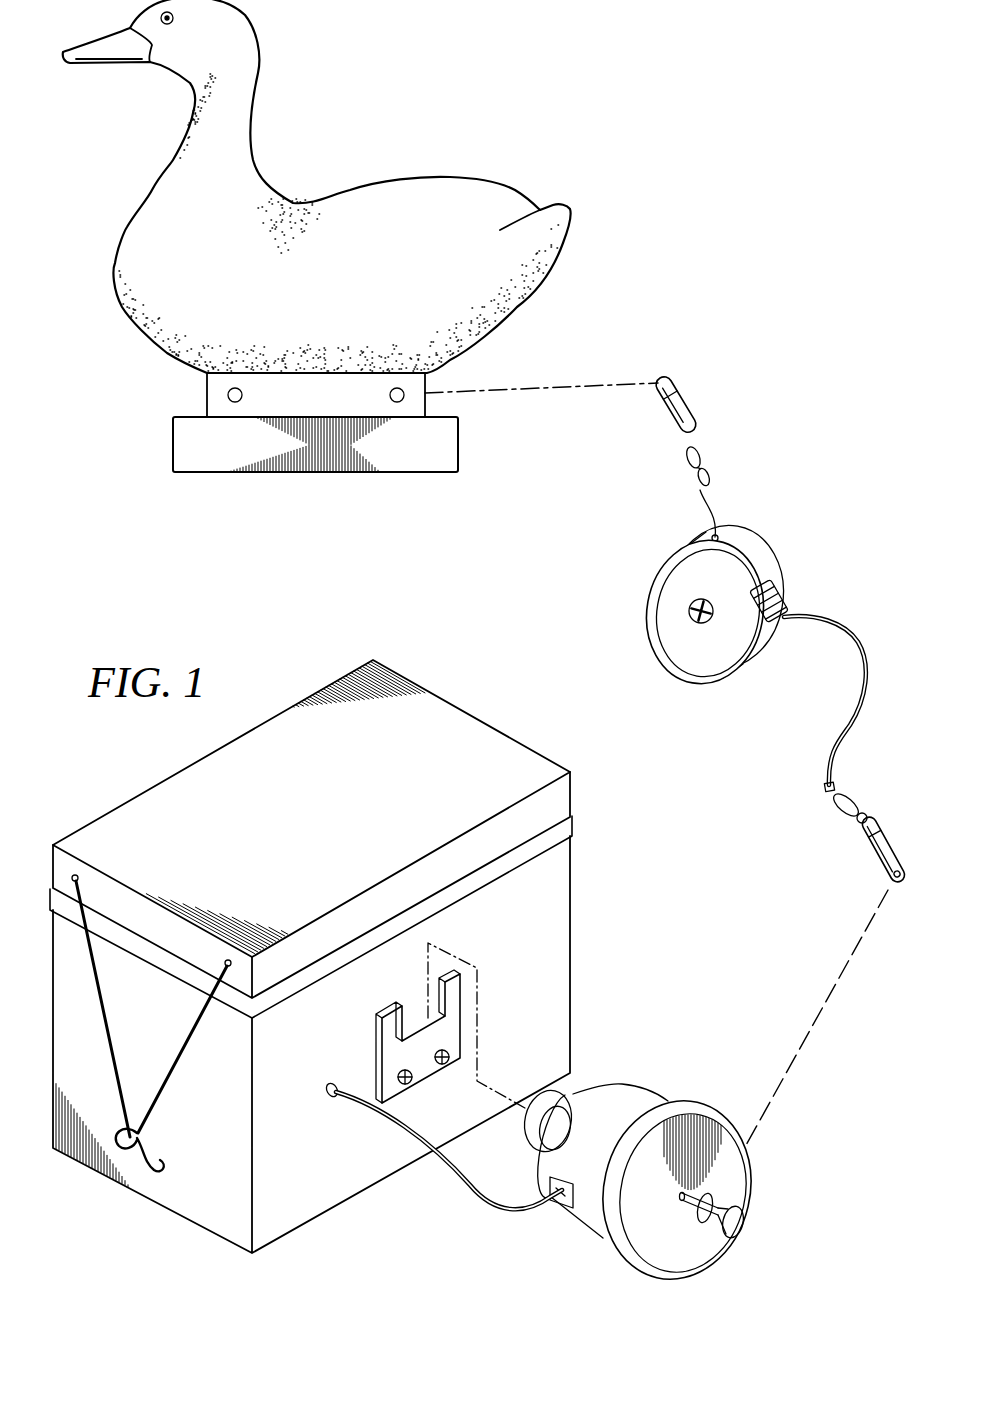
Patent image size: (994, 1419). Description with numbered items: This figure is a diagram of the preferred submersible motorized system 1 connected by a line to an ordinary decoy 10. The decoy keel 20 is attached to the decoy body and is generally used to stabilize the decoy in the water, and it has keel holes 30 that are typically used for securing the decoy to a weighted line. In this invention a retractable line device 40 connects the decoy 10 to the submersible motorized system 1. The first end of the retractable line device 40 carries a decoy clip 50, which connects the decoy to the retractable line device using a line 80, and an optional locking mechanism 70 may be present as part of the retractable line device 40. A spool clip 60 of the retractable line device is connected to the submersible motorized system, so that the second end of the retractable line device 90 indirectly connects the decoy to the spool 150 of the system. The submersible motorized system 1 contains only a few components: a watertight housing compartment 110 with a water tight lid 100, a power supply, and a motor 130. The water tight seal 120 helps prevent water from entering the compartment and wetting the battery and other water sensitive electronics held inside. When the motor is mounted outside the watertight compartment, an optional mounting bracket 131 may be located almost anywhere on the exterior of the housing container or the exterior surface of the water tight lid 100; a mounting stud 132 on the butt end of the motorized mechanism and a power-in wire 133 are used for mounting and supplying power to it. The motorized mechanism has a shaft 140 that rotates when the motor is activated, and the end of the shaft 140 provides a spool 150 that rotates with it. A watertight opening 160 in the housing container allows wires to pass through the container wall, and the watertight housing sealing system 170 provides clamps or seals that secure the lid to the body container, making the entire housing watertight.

The submersible motorized system 1 is at (116, 809).
The decoy 10 is at (483, 178).
The decoy keel 20 is at (173, 443).
The keel holes 30 is at (228, 395).
The retractable line device 40 is at (648, 578).
The decoy clip 50 is at (662, 380).
The spool clip 60 is at (866, 858).
The locking mechanism 70 is at (783, 604).
The line 80 is at (682, 455).
The second end of the retractable line device 90 is at (826, 756).
The water tight lid 100 is at (334, 822).
The watertight housing compartment 110 is at (148, 1199).
The water tight seal 120 is at (574, 822).
The motor 130 is at (670, 1281).
The mounting bracket 131 is at (382, 1046).
The mounting stud 132 is at (556, 1098).
The power-in wire 133 is at (488, 1218).
The shaft 140 is at (686, 1211).
The spool 150 is at (746, 1226).
The watertight opening 160 is at (326, 1097).
The watertight housing sealing system 170 is at (190, 1038).